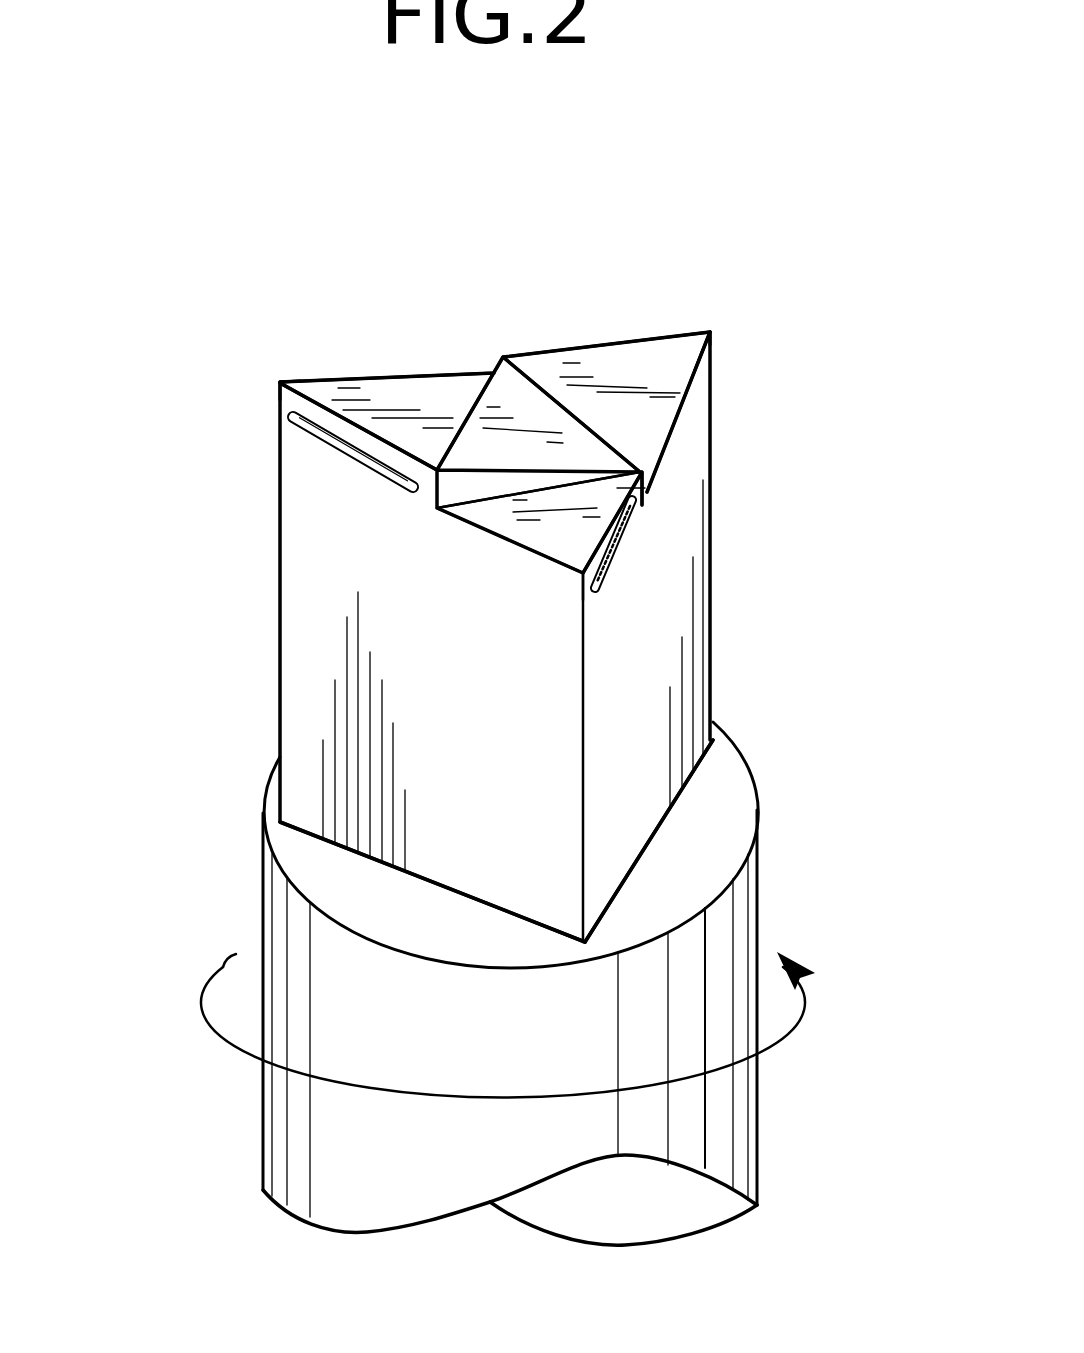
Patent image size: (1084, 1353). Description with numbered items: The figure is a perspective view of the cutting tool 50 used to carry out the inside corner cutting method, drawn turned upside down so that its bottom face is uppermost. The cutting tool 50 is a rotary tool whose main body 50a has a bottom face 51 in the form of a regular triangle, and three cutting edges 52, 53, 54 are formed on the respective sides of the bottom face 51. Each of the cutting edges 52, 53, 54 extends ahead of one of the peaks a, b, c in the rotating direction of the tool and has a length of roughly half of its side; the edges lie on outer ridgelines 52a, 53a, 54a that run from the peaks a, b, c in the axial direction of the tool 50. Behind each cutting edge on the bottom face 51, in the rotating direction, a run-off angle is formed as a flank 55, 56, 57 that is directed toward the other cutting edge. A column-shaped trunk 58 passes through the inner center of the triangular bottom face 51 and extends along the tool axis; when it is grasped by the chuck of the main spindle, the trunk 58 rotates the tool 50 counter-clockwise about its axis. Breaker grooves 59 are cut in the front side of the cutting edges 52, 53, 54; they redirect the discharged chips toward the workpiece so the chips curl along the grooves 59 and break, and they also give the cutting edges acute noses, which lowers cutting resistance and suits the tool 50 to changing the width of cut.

The cutting tool 50 is at (745, 670).
The main body 50a is at (313, 693).
The bottom face 51 is at (528, 408).
The cutting edge 52 is at (633, 527).
The outer ridgeline 52a is at (585, 593).
The cutting edge 53 is at (632, 338).
The outer ridgeline 53a is at (718, 328).
The cutting edge 54 is at (290, 422).
The outer ridgeline 54a is at (277, 383).
The flank 55 is at (648, 488).
The flank 56 is at (675, 362).
The flank 57 is at (413, 395).
The trunk 58 is at (735, 900).
The breaker groove 59 is at (617, 545).
The peak a is at (583, 573).
The peak b is at (712, 328).
The peak c is at (278, 382).